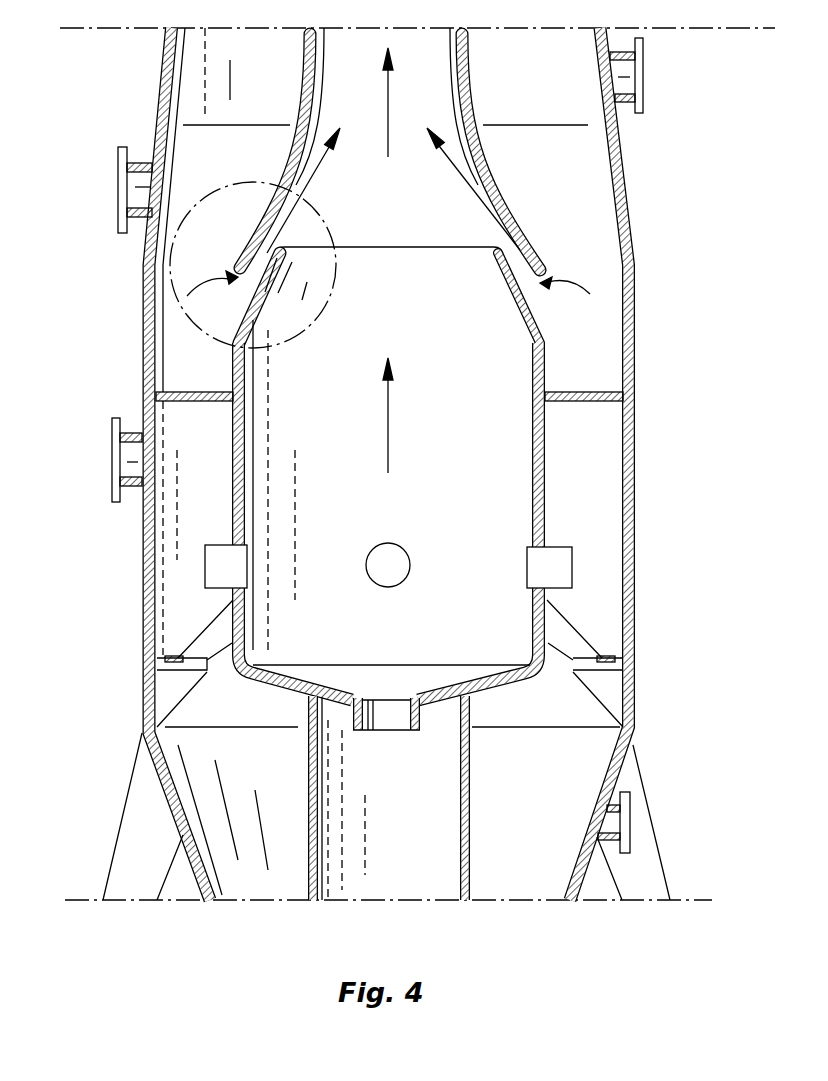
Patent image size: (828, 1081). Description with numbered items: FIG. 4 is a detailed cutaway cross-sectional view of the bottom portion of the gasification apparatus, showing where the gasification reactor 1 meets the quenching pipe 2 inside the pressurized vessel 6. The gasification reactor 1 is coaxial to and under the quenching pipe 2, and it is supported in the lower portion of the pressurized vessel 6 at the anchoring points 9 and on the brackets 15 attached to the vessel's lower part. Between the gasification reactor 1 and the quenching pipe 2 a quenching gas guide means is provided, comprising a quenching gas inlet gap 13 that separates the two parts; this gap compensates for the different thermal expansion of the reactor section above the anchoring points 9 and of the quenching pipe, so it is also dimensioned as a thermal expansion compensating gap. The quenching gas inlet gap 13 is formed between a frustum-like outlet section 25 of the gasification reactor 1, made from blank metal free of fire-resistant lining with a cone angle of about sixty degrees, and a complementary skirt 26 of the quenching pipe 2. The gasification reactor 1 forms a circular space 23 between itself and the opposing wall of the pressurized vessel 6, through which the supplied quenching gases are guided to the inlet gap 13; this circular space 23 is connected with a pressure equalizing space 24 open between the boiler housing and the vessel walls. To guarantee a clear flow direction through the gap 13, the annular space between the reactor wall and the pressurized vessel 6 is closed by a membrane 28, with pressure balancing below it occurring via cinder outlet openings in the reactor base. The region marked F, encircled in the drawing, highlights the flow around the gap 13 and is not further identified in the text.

The gasification reactor 1 is at (497, 467).
The quenching pipe 2 is at (440, 57).
The pressurized vessel 6 is at (167, 85).
The anchoring points 9 is at (168, 690).
The quenching gas inlet gap 13 is at (295, 250).
The brackets 15 is at (178, 657).
The circular space 23 is at (168, 340).
The pressure equalizing space 24 is at (197, 43).
The outlet section 25 is at (502, 253).
The skirt 26 is at (538, 265).
The membrane 28 is at (580, 392).
The eddy zone F is at (173, 290).